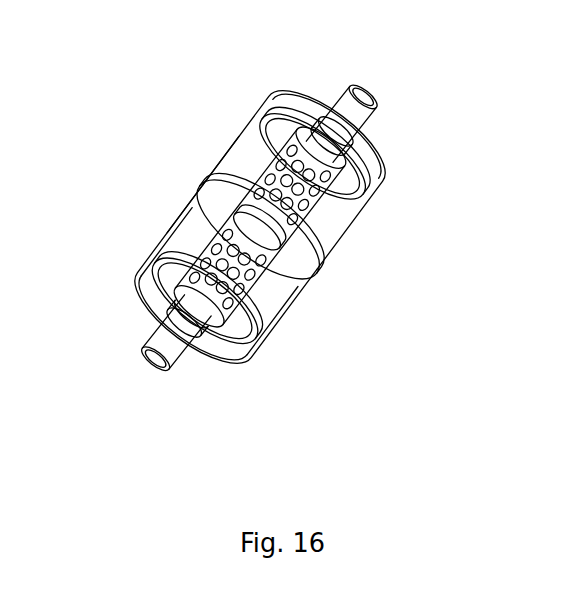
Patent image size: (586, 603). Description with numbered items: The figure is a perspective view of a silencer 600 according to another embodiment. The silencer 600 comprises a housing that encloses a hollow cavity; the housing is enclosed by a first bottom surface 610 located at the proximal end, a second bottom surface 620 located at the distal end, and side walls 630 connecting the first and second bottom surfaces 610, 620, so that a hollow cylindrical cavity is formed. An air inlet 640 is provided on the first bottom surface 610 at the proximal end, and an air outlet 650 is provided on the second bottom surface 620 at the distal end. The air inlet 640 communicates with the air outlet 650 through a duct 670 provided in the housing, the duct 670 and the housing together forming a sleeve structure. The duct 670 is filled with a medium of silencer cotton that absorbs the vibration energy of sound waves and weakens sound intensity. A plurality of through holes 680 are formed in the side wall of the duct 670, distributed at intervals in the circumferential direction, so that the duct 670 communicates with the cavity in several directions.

The silencer 600 is at (460, 33).
The first bottom surface 610 is at (217, 349).
The second bottom surface 620 is at (287, 100).
The side walls 630 is at (241, 136).
The air inlet 640 is at (150, 336).
The air outlet 650 is at (355, 90).
The duct 670 is at (200, 207).
The through holes 680 is at (313, 200).